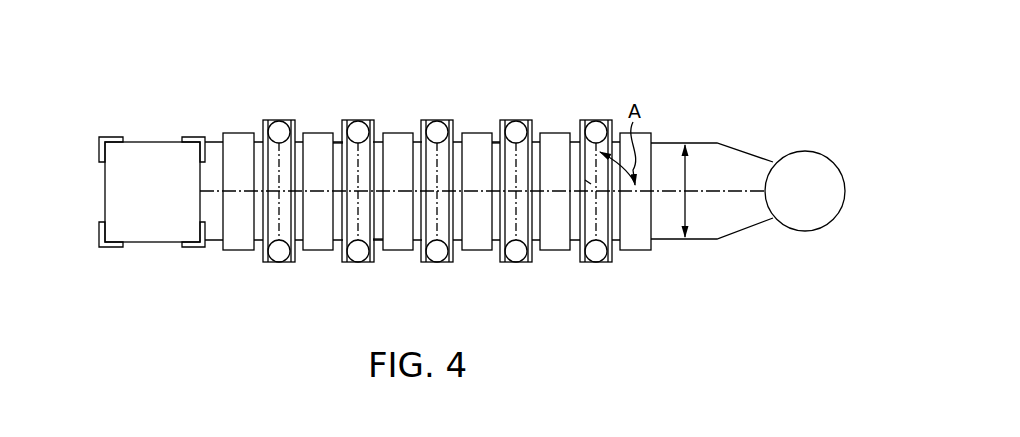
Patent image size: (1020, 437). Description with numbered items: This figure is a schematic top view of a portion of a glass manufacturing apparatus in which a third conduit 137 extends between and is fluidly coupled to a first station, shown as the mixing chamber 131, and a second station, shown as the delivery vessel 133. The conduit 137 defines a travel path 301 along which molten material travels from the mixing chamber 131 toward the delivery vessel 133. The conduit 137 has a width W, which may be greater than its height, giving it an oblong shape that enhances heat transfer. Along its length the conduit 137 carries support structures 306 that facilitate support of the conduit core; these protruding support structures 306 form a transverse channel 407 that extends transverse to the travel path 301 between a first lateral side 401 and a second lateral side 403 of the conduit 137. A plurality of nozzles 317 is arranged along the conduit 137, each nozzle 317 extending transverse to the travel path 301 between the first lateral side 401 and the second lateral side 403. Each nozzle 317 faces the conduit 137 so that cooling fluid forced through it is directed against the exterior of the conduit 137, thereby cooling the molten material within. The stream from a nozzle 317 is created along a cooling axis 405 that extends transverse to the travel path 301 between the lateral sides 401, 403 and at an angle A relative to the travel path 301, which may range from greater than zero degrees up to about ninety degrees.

The mixing chamber 131 is at (150, 117).
The delivery vessel 133 is at (796, 143).
The third conduit 137 is at (665, 128).
The travel path 301 is at (247, 192).
The support structures 306 is at (245, 251).
The nozzle 317 is at (270, 120).
The first lateral side 401 is at (378, 242).
The second lateral side 403 is at (340, 130).
The cooling axis 405 is at (592, 182).
The transverse channel 407 is at (497, 167).